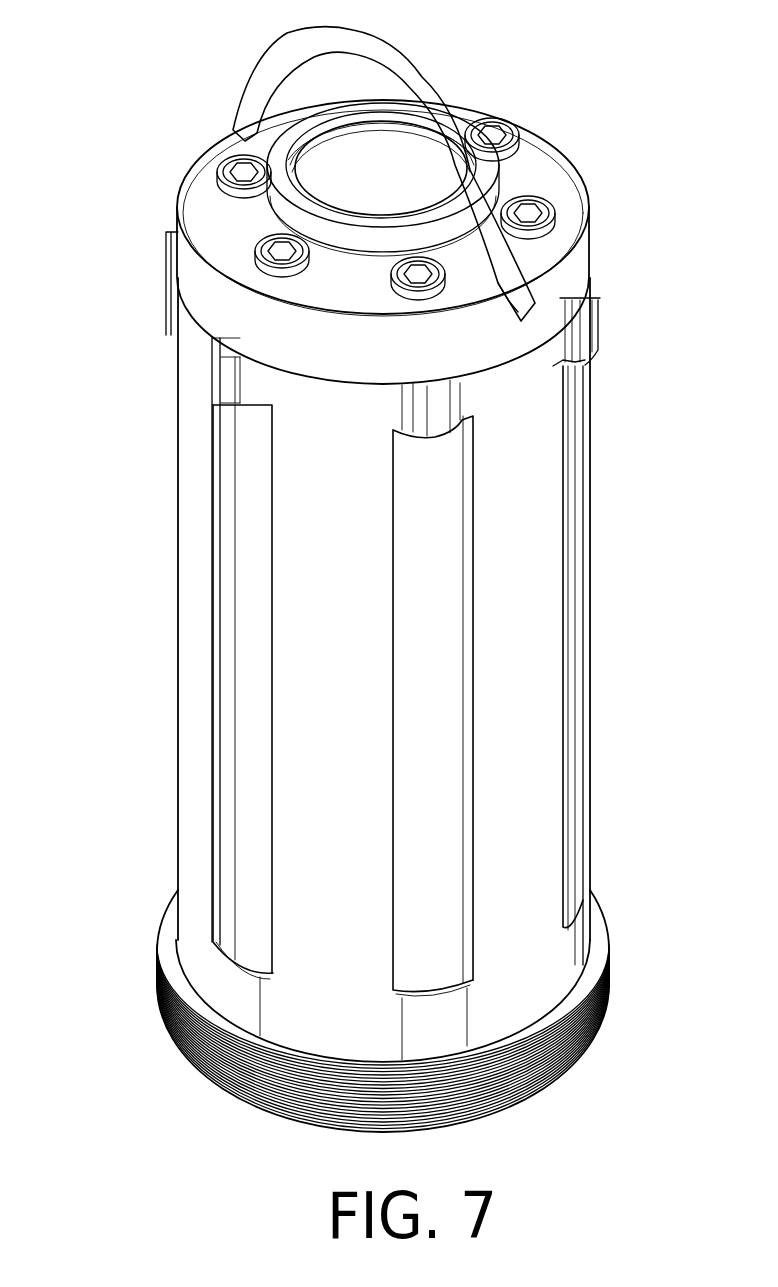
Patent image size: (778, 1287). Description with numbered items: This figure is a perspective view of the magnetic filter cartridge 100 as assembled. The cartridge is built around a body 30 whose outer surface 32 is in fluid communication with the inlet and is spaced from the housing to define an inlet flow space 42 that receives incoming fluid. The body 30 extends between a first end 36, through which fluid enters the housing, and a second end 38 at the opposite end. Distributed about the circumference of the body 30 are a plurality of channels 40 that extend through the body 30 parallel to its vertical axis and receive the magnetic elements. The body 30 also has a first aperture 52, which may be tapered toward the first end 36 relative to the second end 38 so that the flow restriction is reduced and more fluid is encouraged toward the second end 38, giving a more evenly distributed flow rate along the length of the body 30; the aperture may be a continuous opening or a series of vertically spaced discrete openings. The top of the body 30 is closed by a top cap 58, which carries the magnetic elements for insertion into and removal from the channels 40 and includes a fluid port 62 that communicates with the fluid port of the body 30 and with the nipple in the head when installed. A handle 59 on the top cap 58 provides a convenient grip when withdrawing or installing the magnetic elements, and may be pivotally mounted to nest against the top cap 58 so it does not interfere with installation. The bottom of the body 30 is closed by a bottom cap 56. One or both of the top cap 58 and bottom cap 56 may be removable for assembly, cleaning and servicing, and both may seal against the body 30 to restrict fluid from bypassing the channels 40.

The magnetic filter cartridge 100 is at (615, 213).
The body 30 is at (187, 756).
The outer surface 32 is at (502, 452).
The first end 36 is at (527, 350).
The second end 38 is at (513, 1013).
The channels 40 is at (222, 500).
The inlet flow space 42 is at (502, 558).
The first aperture 52 is at (222, 567).
The bottom cap 56 is at (187, 1067).
The top cap 58 is at (222, 304).
The handle 59 is at (412, 77).
The fluid port 62 is at (333, 160).